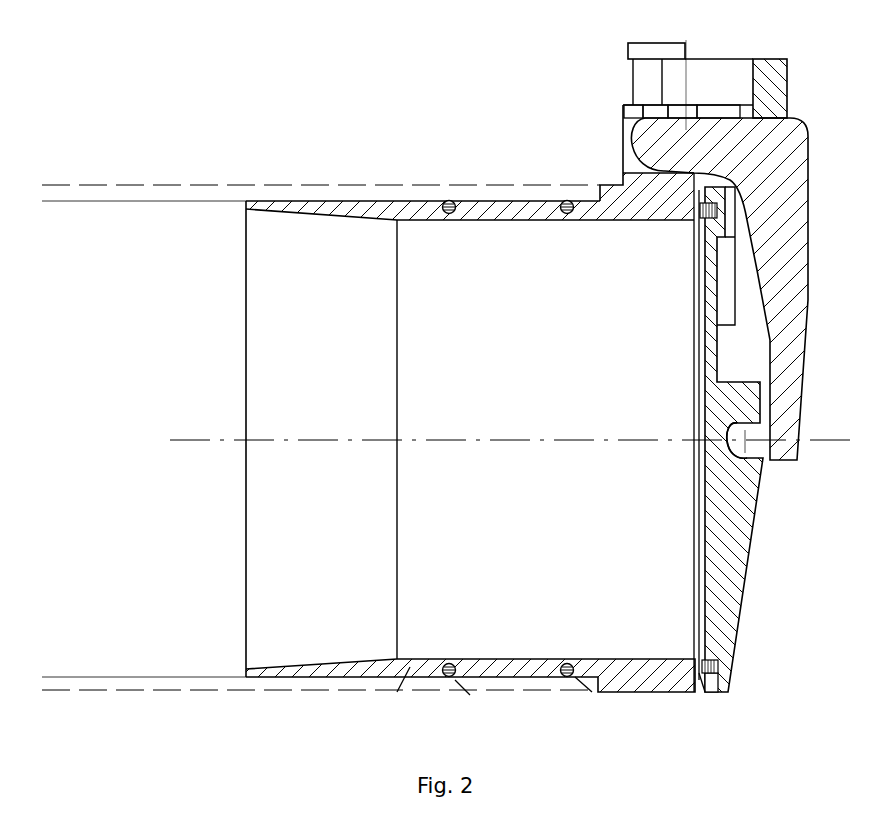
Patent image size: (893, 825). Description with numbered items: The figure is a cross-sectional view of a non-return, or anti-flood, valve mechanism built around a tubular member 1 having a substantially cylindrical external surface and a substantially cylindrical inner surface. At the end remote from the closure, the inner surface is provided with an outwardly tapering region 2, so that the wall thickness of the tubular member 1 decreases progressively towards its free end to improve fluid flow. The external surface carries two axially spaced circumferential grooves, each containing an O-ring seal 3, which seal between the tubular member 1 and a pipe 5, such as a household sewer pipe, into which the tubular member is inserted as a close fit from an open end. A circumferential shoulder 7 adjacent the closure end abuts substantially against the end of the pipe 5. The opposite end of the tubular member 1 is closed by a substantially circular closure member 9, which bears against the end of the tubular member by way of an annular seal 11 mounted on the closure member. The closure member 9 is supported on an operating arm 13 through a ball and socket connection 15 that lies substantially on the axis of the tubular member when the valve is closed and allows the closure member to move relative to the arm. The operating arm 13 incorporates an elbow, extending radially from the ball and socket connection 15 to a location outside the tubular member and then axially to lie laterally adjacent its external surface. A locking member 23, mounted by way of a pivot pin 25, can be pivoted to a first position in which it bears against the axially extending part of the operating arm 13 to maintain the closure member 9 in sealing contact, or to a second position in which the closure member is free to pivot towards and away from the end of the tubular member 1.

The tubular member 1 is at (505, 207).
The outwardly tapering region 2 is at (306, 208).
The O-ring seal 3 is at (444, 201).
The pipe 5 is at (220, 195).
The circumferential shoulder 7 is at (598, 195).
The closure member 9 is at (737, 552).
The annular seal 11 is at (708, 673).
The operating arm 13 is at (808, 305).
The ball and socket connection 15 is at (745, 455).
The locking member 23 is at (767, 92).
The pivot pin 25 is at (657, 50).